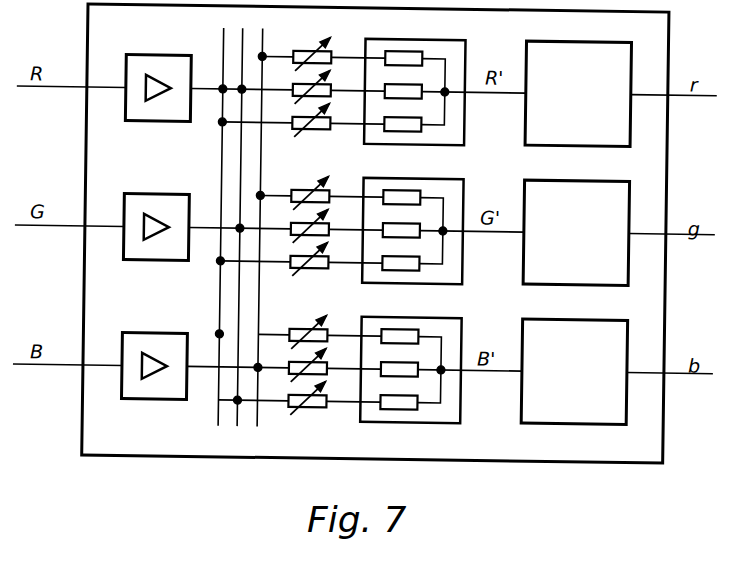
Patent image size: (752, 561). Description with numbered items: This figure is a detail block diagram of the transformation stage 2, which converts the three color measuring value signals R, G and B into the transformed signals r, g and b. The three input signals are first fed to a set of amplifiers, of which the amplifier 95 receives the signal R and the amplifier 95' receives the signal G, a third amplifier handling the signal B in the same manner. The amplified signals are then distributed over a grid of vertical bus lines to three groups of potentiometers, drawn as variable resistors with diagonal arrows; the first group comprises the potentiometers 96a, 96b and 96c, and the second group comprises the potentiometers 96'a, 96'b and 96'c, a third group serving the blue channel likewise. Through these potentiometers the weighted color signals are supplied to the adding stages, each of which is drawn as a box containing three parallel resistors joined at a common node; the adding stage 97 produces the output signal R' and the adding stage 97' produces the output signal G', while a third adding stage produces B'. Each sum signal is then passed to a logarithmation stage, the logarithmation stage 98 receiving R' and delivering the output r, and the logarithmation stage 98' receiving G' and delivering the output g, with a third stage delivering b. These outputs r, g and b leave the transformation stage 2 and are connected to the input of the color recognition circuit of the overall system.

The transformation stage 2 is at (557, 443).
The amplifier 95 is at (159, 106).
The amplifier 95' is at (160, 245).
The potentiometer 96a is at (335, 43).
The potentiometer 96b is at (295, 81).
The potentiometer 96c is at (296, 116).
The potentiometer 96'a is at (320, 181).
The potentiometer 96'b is at (298, 203).
The potentiometer 96'c is at (298, 268).
The adding stage 97 is at (445, 81).
The adding stage 97' is at (443, 219).
The logarithmation stage 98 is at (592, 82).
The logarithmation stage 98' is at (591, 220).